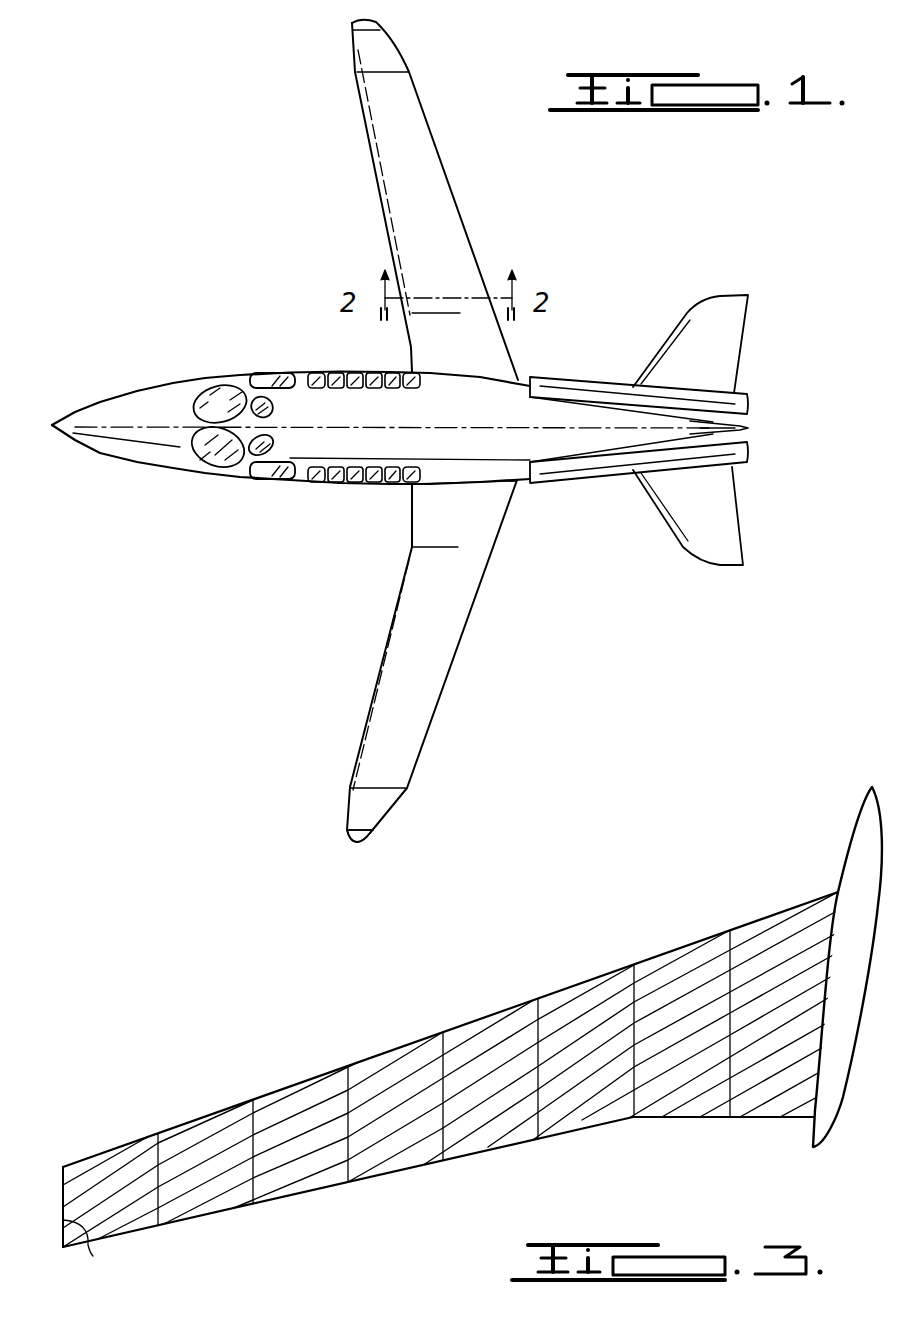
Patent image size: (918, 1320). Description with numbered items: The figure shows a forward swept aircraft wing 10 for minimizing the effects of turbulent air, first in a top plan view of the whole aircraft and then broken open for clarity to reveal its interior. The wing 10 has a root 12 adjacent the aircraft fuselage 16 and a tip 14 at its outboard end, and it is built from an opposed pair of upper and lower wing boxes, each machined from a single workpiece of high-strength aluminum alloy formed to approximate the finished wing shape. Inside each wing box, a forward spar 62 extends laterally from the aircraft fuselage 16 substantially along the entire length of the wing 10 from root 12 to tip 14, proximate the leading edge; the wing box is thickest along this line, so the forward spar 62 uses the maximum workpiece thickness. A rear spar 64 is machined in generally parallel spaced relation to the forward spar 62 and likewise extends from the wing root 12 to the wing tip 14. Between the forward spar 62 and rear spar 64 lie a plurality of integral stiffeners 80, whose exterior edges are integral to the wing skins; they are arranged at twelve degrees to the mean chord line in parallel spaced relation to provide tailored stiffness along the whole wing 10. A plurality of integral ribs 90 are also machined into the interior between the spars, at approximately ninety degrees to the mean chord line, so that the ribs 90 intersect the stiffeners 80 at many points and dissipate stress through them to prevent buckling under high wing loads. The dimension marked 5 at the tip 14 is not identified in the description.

In FIG. 3, the wing tip thickness 5 is at (35, 1221).
In FIG. 1, the forward swept aircraft wing 10 is at (438, 642).
In FIG. 3, the forward swept aircraft wing 10 is at (782, 1012).
In FIG. 1, the root 12 is at (473, 483).
In FIG. 3, the root 12 is at (797, 1090).
In FIG. 1, the tip 14 is at (355, 840).
In FIG. 3, the tip 14 is at (63, 1177).
In FIG. 1, the aircraft fuselage 16 is at (495, 433).
In FIG. 3, the aircraft fuselage 16 is at (860, 840).
In FIG. 3, the forward spar 62 is at (542, 1142).
In FIG. 3, the rear spar 64 is at (357, 1063).
In FIG. 3, the integral stiffeners 80 is at (573, 1053).
In FIG. 3, the integral ribs 90 is at (430, 1147).